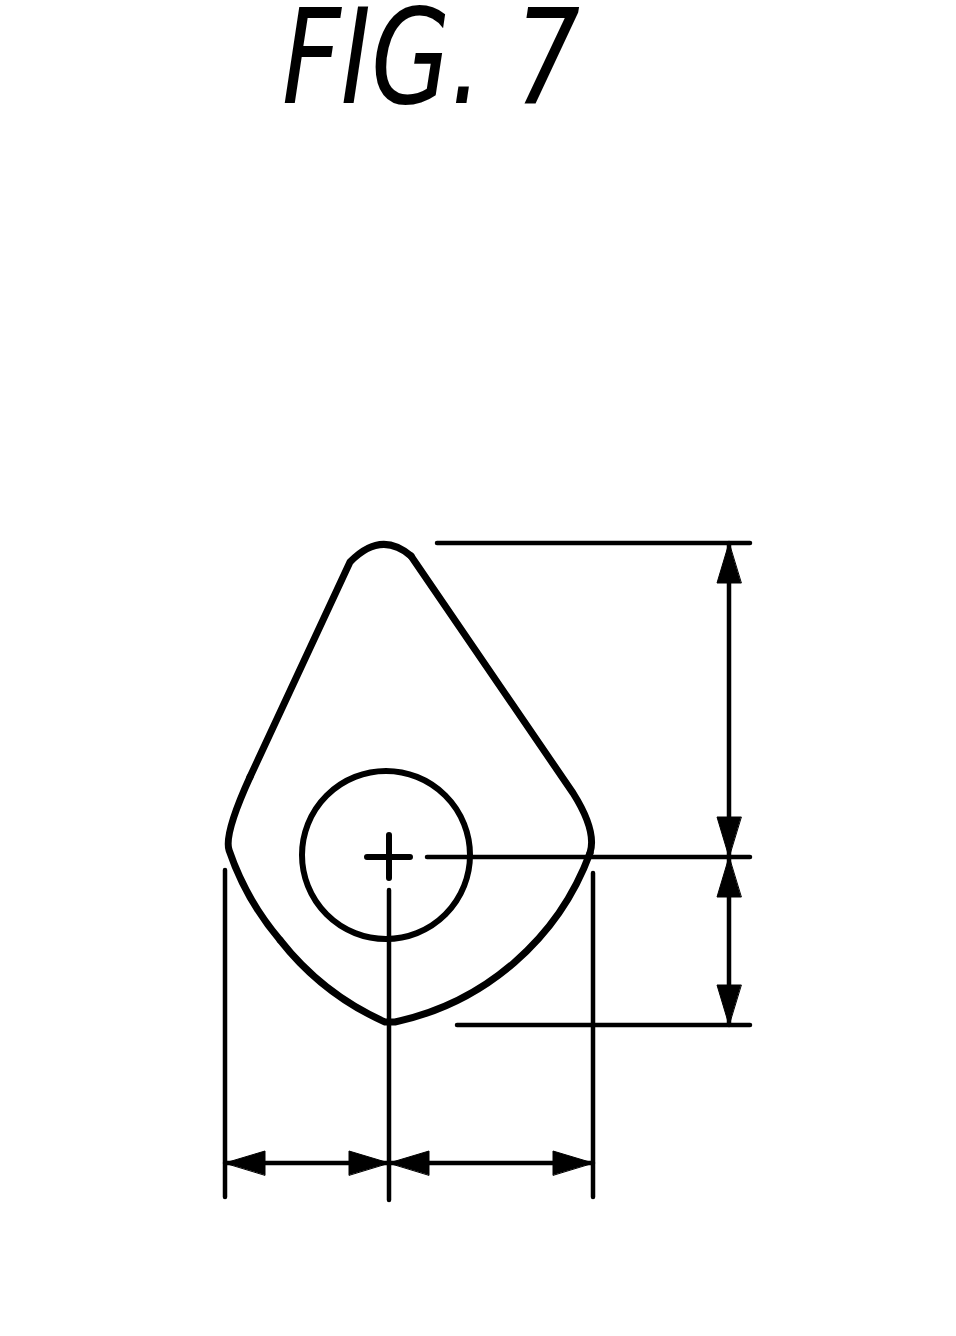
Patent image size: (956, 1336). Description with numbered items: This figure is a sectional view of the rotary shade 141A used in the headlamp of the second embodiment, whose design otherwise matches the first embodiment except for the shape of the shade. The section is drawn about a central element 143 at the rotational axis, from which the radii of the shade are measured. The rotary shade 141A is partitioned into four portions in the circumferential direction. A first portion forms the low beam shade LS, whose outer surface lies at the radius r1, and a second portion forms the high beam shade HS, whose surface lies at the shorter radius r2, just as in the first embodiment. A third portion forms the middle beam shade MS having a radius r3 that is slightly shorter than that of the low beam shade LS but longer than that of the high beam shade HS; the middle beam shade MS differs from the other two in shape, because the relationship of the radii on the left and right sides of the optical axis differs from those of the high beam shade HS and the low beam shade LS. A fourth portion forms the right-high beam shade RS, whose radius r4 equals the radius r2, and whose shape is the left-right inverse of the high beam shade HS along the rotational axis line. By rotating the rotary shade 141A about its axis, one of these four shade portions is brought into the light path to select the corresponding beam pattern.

The rotary shade 141A is at (378, 710).
The shaft hole 143 is at (340, 832).
The low beam shade LS is at (360, 597).
The middle beam shade MS is at (558, 832).
The right-high beam shade RS is at (250, 847).
The high beam shade HS is at (370, 990).
The radius of the low beam shade r1 is at (612, 700).
The radius of the high beam shade r2 is at (623, 941).
The radius of the middle beam shade r3 is at (491, 1063).
The radius of the right-high beam shade r4 is at (307, 1061).